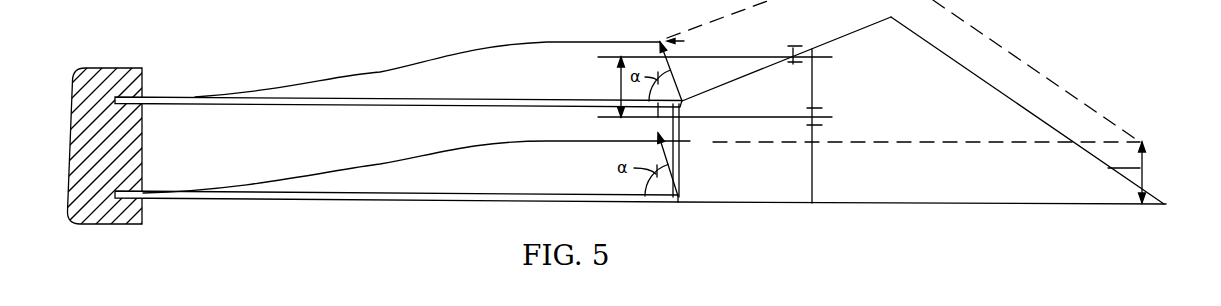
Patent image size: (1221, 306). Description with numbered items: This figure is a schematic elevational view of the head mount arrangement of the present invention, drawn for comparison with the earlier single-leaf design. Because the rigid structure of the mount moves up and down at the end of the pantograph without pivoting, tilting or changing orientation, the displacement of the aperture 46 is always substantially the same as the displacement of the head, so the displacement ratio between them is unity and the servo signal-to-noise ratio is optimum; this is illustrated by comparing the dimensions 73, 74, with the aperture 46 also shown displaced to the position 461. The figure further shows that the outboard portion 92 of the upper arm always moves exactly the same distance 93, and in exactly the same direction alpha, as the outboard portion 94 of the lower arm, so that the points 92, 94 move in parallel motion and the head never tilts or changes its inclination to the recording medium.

The dimension 73 is at (618, 82).
The distance 93 is at (672, 70).
The outboard portion of the upper arm 92 is at (684, 102).
The outboard portion of the lower arm 94 is at (684, 200).
The aperture 46 is at (810, 118).
The reference point on beam axis 461 is at (795, 19).
The dimension 74 is at (1108, 168).